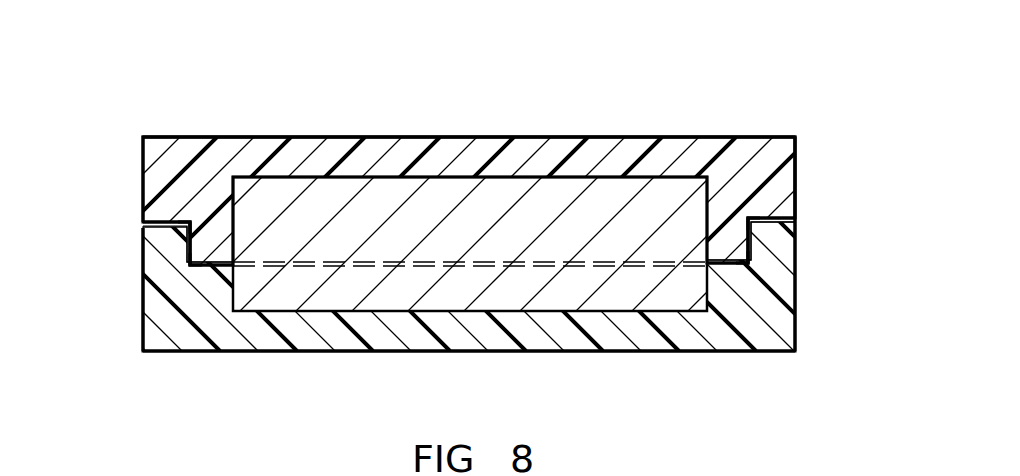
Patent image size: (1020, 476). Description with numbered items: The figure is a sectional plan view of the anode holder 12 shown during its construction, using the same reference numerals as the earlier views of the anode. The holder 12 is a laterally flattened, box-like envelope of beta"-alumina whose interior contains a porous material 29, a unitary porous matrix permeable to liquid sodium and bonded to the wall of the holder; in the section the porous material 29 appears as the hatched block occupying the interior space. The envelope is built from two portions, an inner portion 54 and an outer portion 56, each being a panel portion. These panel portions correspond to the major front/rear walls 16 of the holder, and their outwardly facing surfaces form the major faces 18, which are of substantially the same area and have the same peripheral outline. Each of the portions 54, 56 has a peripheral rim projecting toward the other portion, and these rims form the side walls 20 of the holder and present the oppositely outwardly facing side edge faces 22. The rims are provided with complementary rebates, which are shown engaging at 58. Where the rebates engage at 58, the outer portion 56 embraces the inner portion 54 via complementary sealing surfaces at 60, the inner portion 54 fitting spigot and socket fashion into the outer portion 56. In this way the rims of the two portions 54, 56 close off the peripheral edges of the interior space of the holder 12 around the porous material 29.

The holder 12 is at (706, 55).
The major front/rear walls 16 is at (493, 138).
The major faces 18 is at (437, 132).
The side walls 20 is at (163, 266).
The side edge faces 22 is at (135, 313).
The porous material 29 is at (338, 296).
The inner envelope portion 54 is at (295, 100).
The outer envelope portion 56 is at (133, 374).
The rebates 58 is at (172, 256).
The sealing surfaces 60 is at (178, 238).